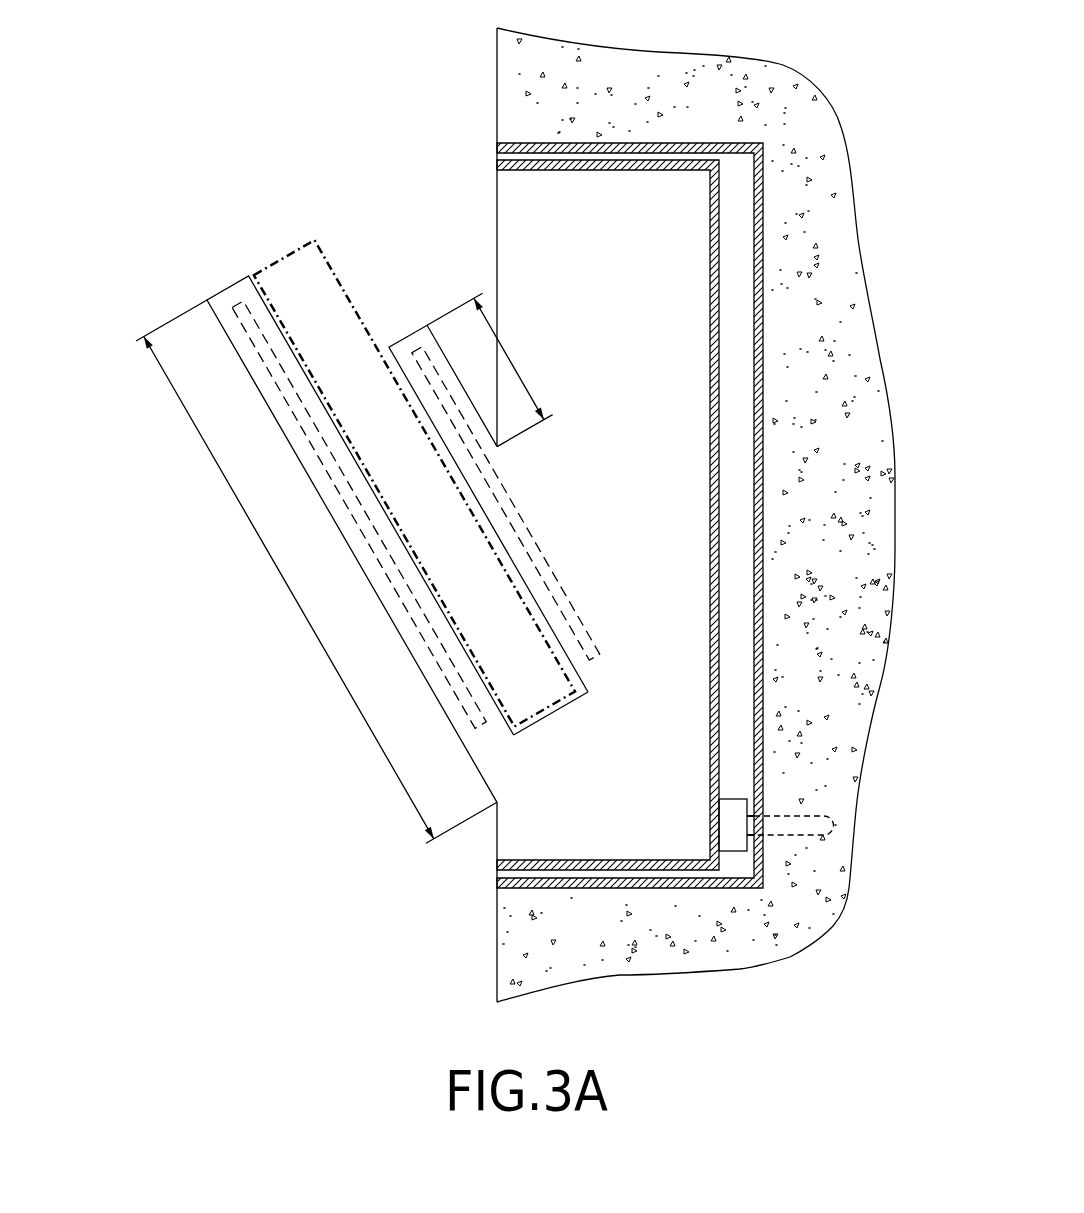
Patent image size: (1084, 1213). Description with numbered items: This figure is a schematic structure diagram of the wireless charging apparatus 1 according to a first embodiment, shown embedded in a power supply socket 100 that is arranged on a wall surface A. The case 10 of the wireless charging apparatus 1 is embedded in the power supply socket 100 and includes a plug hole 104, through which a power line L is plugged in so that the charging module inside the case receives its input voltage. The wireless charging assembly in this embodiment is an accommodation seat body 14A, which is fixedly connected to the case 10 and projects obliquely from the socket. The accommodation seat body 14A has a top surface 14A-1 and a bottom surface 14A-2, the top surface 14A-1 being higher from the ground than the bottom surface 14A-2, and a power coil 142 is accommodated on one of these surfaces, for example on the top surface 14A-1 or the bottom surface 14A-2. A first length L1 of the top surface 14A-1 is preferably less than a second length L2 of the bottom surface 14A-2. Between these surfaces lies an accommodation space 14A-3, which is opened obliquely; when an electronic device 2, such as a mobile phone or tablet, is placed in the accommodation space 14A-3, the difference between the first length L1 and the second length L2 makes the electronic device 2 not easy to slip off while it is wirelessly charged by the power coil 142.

The wall surface A is at (497, 90).
The power supply socket 100 is at (650, 150).
The case 10 is at (497, 165).
The plug hole 104 is at (728, 808).
The power line L is at (802, 826).
The wireless charging apparatus 1 is at (498, 527).
The accommodation seat body 14A is at (365, 500).
The top surface 14A-1 is at (406, 311).
The bottom surface 14A-2 is at (214, 282).
The accommodation space 14A-3 is at (246, 266).
The electronic device 2 is at (293, 273).
The power coil 142 is at (523, 537).
The first length L1 is at (489, 369).
The second length L2 is at (316, 571).